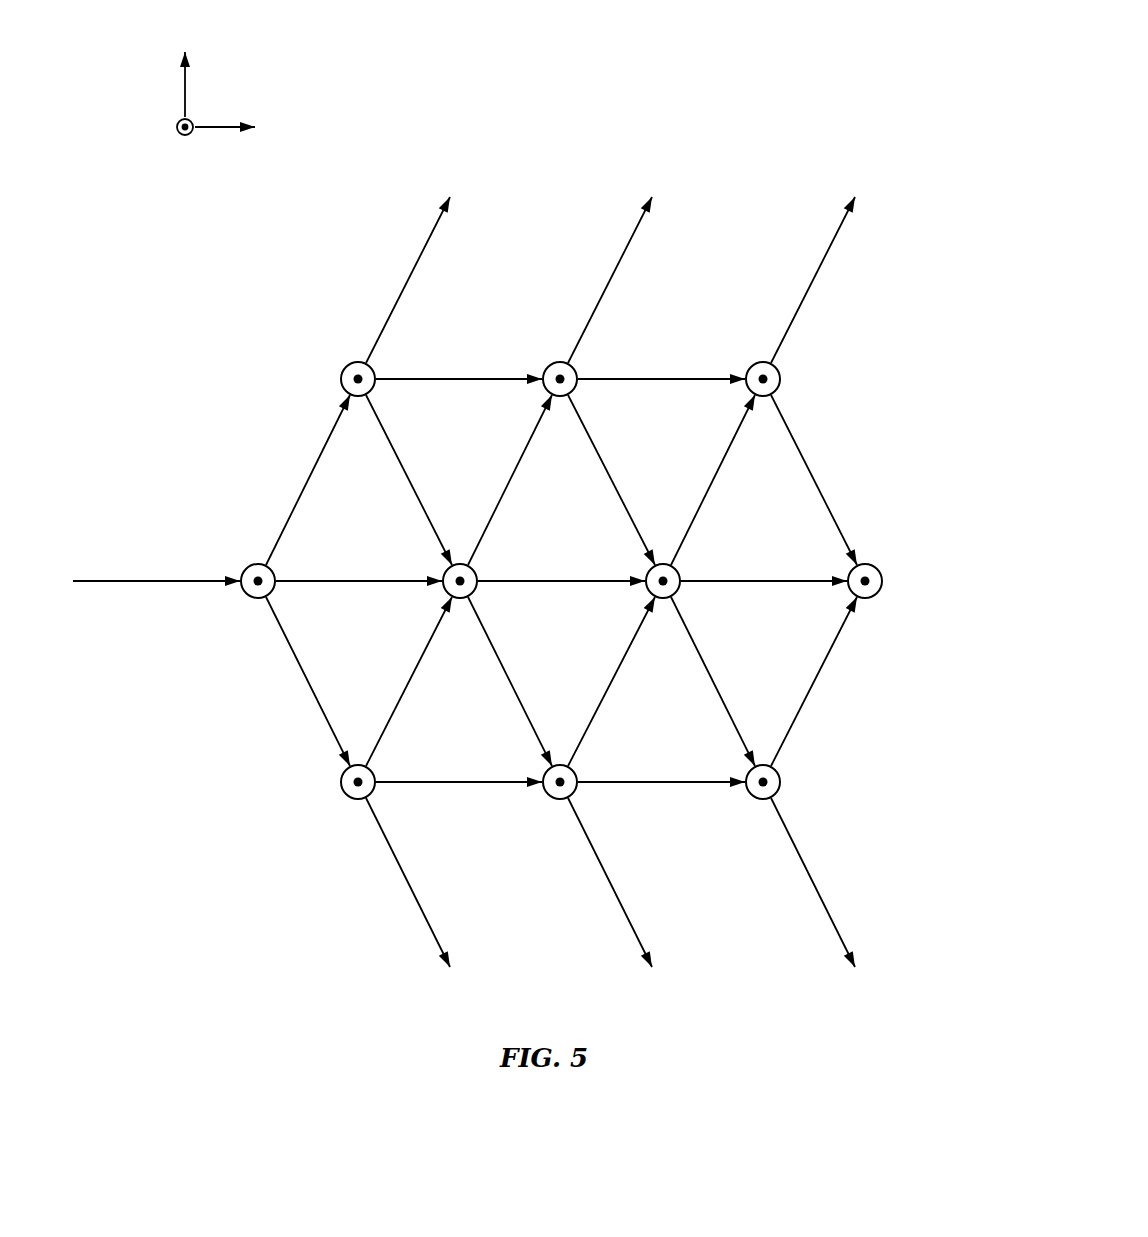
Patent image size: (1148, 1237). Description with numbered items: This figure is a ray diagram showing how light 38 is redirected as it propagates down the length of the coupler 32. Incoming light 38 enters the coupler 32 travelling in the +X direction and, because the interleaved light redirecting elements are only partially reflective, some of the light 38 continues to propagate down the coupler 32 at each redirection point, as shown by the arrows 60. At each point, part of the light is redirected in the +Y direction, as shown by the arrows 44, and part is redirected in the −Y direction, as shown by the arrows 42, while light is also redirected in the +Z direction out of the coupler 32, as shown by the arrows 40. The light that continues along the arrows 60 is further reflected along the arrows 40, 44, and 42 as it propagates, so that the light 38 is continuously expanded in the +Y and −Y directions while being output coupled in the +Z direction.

The coupler 32 is at (774, 78).
The light 38 is at (133, 585).
The arrows 40 is at (248, 565).
The arrows 42 is at (405, 482).
The arrows 44 is at (425, 250).
The arrows 60 is at (325, 583).